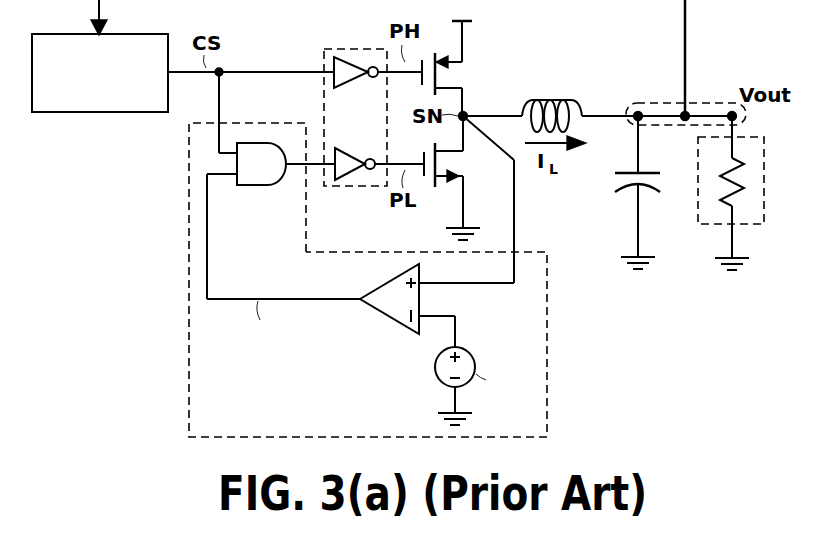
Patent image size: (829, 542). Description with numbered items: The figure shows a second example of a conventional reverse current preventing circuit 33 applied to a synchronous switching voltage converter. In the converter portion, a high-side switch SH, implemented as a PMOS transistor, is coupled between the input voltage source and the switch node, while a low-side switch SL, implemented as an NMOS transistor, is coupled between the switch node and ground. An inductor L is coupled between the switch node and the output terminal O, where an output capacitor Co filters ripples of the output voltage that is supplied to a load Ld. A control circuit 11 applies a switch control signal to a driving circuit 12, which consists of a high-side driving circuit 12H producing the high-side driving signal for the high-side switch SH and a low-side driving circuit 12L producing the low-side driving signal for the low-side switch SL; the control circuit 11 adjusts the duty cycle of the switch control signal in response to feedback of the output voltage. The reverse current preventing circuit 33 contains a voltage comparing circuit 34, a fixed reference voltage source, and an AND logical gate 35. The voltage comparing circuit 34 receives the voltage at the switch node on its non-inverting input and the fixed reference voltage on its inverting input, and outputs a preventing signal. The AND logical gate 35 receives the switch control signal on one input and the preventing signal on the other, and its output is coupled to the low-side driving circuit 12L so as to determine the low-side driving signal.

The control circuit 11 is at (78, 113).
The driving circuit 12 is at (354, 48).
The high-side driving circuit 12H is at (356, 82).
The low-side driving circuit 12L is at (355, 154).
The reverse current preventing circuit 33 is at (186, 330).
The voltage comparing circuit 34 is at (401, 336).
The AND logical gate 35 is at (253, 187).
The high-side switch SH is at (452, 70).
The low-side switch SL is at (455, 165).
The inductor L is at (552, 102).
The output capacitor Co is at (620, 190).
The load Ld is at (764, 168).
The output terminal O is at (715, 105).